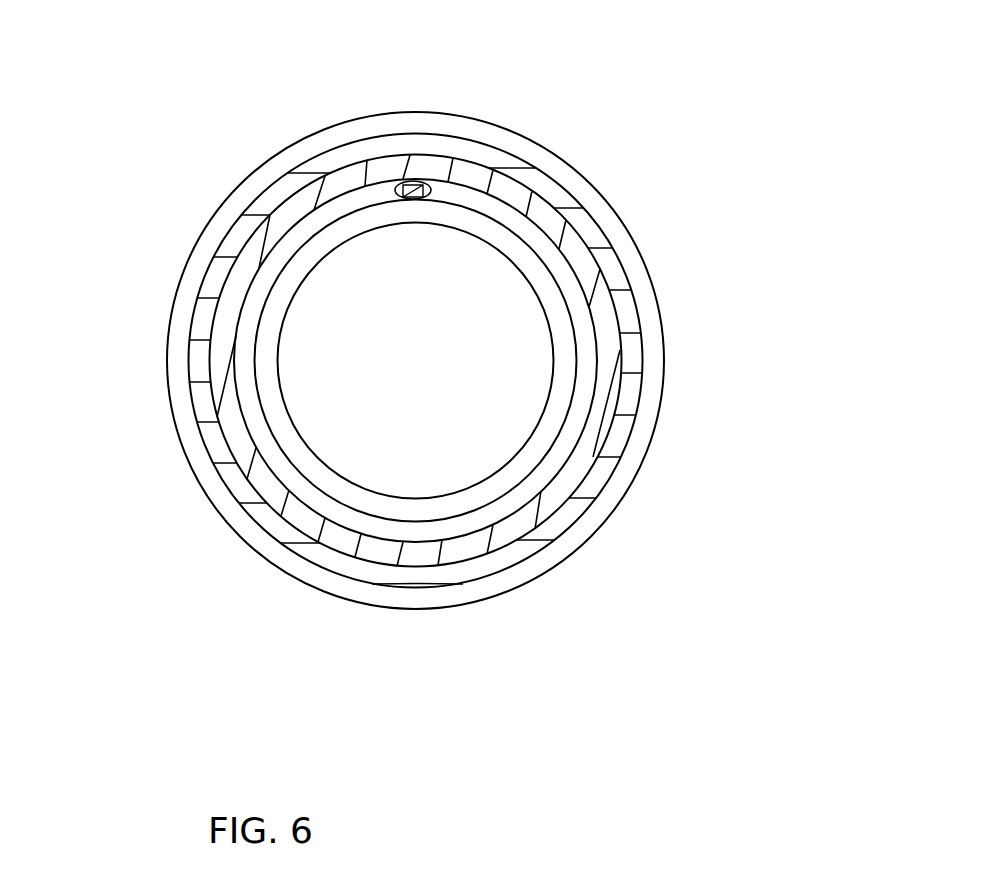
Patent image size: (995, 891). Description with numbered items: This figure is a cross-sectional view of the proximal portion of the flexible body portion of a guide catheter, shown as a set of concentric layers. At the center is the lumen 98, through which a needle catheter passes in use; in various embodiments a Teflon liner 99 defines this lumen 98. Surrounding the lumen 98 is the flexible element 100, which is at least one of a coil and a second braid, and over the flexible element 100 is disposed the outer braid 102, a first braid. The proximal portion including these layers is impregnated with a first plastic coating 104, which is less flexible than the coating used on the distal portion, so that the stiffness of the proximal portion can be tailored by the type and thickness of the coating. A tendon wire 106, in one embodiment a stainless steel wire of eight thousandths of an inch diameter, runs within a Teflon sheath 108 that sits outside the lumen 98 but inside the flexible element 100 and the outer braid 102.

The lumen 98 is at (296, 274).
The Teflon liner 99 is at (252, 328).
The flexible element 100 is at (598, 263).
The outer braid 102 is at (640, 316).
The first plastic coating 104 is at (529, 236).
The tendon wire 106 is at (413, 183).
The Teflon sheath 108 is at (436, 189).